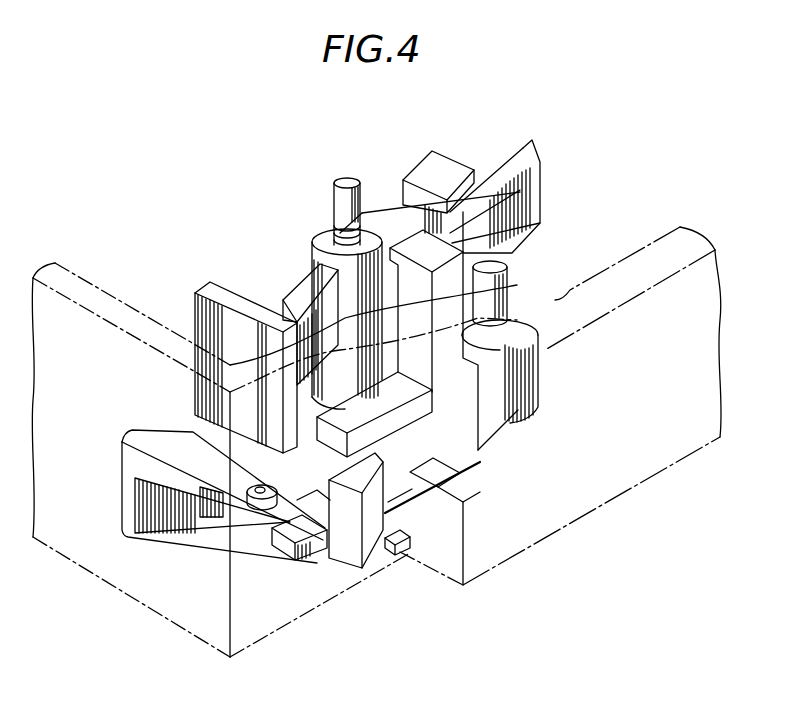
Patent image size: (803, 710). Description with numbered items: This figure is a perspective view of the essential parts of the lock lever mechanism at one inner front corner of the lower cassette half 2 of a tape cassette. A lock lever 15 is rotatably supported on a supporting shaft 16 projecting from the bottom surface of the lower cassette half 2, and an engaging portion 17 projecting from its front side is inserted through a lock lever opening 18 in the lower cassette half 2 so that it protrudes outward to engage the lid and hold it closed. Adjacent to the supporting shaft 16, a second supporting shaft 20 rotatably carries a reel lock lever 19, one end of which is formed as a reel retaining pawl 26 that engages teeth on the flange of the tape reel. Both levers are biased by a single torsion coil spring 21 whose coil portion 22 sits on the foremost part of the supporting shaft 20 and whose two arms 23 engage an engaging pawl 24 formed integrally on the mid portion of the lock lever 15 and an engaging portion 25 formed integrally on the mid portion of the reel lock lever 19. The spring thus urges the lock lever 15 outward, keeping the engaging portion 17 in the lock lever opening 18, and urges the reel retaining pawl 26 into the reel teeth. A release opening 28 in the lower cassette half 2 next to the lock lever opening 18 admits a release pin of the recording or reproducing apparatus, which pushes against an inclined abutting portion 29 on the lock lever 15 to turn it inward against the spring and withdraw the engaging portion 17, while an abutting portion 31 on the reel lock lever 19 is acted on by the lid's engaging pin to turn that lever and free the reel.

The lower cassette half 2 is at (110, 577).
The lock lever 15 is at (398, 452).
The supporting shaft 16 is at (512, 282).
The engaging portion 17 is at (305, 563).
The lock lever opening 18 is at (277, 563).
The reel lock lever 19 is at (285, 298).
The supporting shaft 20 is at (342, 178).
The torsion coil spring 21 is at (378, 212).
The coil portion 22 is at (333, 215).
The arm 23 is at (482, 197).
The engaging pawl 24 is at (512, 252).
The engaging portion 25 is at (450, 160).
The reel retaining pawl 26 is at (537, 140).
The release opening 28 is at (393, 548).
The abutting portion 29 is at (377, 533).
The abutting portion 31 is at (197, 287).